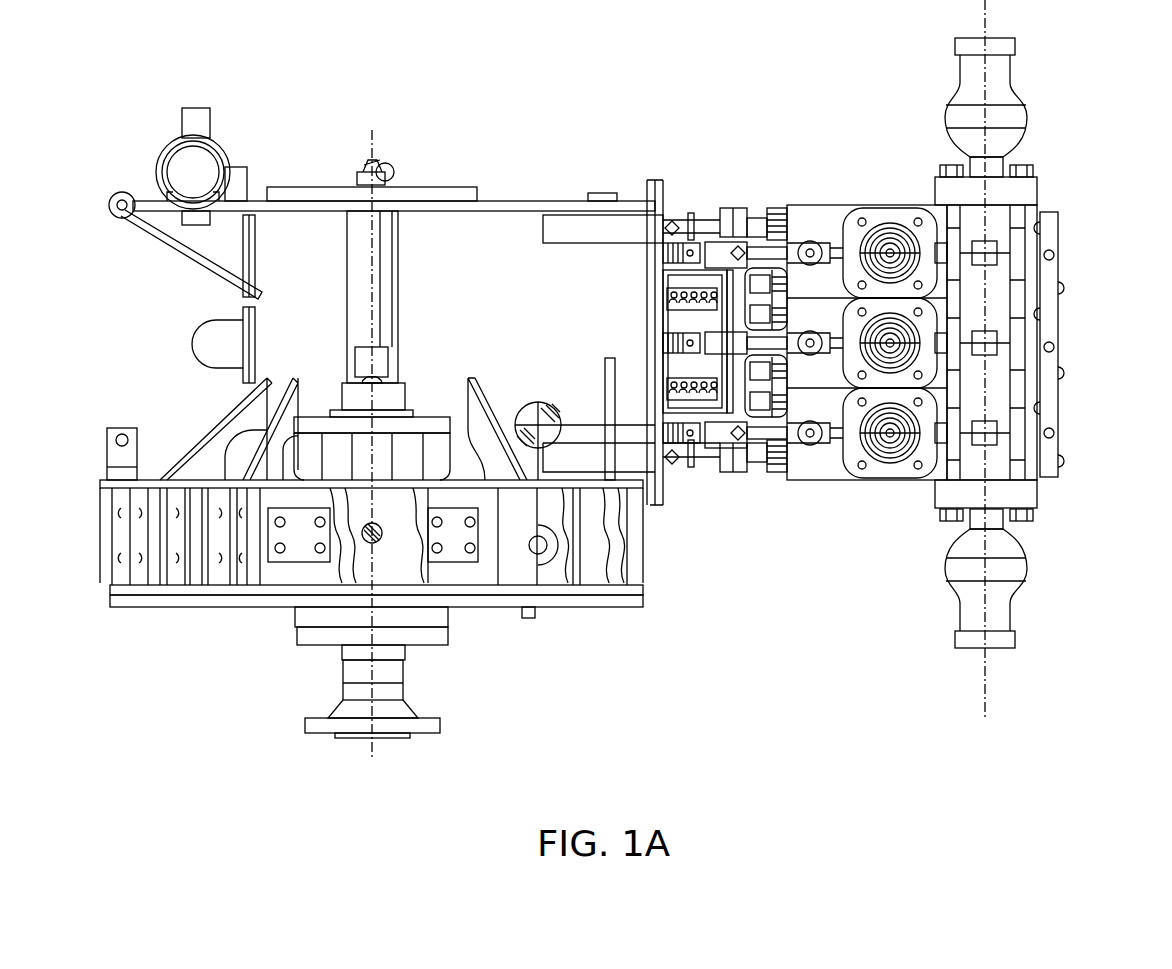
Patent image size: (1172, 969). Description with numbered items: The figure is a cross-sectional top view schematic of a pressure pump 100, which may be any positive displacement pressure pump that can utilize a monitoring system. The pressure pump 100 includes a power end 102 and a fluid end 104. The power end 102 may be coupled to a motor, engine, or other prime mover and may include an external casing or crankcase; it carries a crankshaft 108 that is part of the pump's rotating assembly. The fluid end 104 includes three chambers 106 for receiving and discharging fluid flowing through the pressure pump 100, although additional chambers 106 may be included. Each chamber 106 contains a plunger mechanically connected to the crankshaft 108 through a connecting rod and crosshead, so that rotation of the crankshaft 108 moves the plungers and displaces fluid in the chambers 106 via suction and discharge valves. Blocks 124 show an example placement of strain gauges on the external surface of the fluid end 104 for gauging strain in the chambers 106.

The pressure pump 100 is at (125, 260).
The power end 102 is at (216, 640).
The fluid end 104 is at (880, 655).
The chambers 106 is at (1060, 250).
The crankshaft 108 is at (388, 245).
The blocks 124 is at (998, 428).